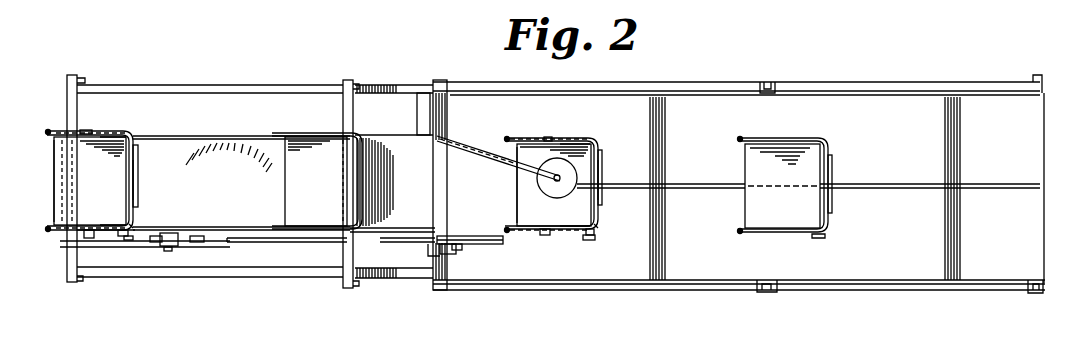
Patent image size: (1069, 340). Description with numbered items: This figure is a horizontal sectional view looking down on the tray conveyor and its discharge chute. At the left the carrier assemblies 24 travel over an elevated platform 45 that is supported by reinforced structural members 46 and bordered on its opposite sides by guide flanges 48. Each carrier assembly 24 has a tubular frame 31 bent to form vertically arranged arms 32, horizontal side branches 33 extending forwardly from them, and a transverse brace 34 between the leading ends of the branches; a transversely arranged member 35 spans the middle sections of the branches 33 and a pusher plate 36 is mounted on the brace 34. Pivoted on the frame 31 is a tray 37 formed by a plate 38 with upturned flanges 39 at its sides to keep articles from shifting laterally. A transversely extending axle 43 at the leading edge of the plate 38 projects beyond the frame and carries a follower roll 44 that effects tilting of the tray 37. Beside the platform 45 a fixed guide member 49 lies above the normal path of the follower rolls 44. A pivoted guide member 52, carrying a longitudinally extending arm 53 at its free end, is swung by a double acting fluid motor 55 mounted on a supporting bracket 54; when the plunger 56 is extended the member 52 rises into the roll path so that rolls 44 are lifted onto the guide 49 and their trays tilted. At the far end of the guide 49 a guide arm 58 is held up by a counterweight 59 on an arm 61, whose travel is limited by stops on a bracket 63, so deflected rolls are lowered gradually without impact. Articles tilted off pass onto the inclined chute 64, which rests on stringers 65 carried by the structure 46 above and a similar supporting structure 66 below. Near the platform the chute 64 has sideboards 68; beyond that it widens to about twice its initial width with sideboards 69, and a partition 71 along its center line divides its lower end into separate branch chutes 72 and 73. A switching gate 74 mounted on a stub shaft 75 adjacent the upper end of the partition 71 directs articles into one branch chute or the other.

The carrier assembly 24 is at (140, 170).
The tubular frame 31 is at (138, 217).
The vertically arranged arms 32 is at (48, 130).
The side branches 33 is at (101, 133).
The transverse brace 34 is at (134, 187).
The transversely arranged member 35 is at (86, 130).
The pusher plate 36 is at (139, 155).
The tray 37 is at (52, 176).
The plate 38 is at (437, 182).
The upturned flanges 39 is at (112, 136).
The transversely extending axle 43 is at (125, 236).
The follower roll 44 is at (128, 241).
The platform 45 is at (229, 164).
The structural members 46 is at (83, 81).
The guide flanges 48 is at (232, 136).
The guide member 49 is at (289, 242).
The guide member 52 is at (192, 243).
The longitudinally extending arm 53 is at (198, 236).
The supporting bracket 54 is at (176, 247).
The double acting fluid motor 55 is at (166, 251).
The plunger 56 is at (169, 233).
The guide arm 58 is at (483, 244).
The counterweight 59 is at (448, 254).
The arm 61 is at (430, 250).
The bracket 63 is at (449, 240).
The inclined chute 64 is at (702, 82).
The stringers 65 is at (405, 86).
The supporting structure 66 is at (770, 83).
The sideboards 68 is at (393, 229).
The sideboards 69 is at (397, 140).
The partition 71 is at (876, 190).
The branch chute 72 is at (877, 137).
The branch chute 73 is at (890, 246).
The switching gate 74 is at (481, 141).
The stub shaft 75 is at (575, 179).